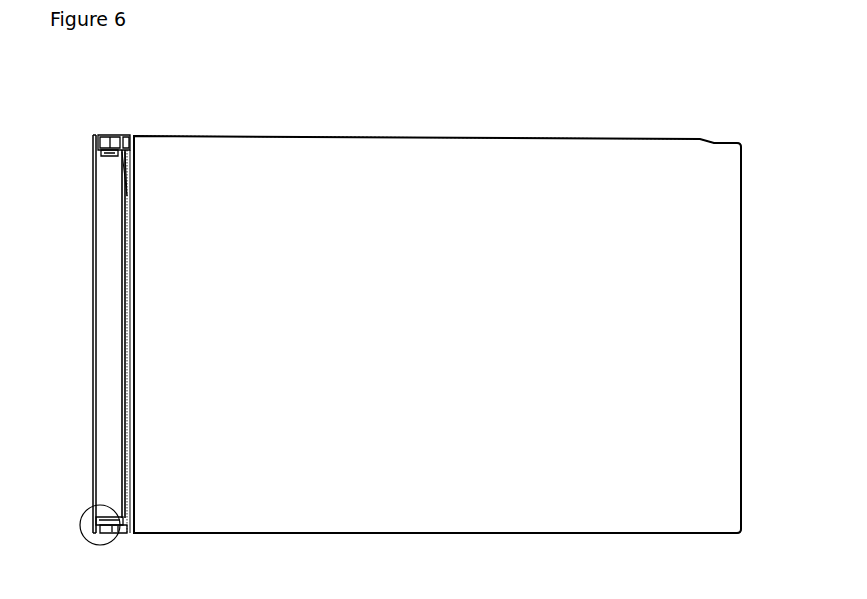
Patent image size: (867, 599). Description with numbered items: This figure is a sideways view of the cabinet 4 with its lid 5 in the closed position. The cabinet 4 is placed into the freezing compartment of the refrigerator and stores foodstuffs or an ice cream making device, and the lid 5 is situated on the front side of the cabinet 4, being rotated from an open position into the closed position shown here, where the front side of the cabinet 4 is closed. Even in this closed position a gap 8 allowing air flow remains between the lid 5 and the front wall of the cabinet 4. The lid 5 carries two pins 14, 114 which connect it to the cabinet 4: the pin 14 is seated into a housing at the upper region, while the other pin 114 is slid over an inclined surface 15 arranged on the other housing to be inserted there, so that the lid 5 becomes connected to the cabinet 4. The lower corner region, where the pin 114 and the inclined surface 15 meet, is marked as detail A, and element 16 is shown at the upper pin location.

The cabinet 4 is at (345, 113).
The lid 5 is at (110, 258).
The gap 8 is at (127, 296).
The pin 14 is at (107, 156).
The top cap 16 is at (106, 151).
The pin 114 is at (96, 520).
The inclined surface 15 is at (102, 532).
The detail region A is at (92, 535).